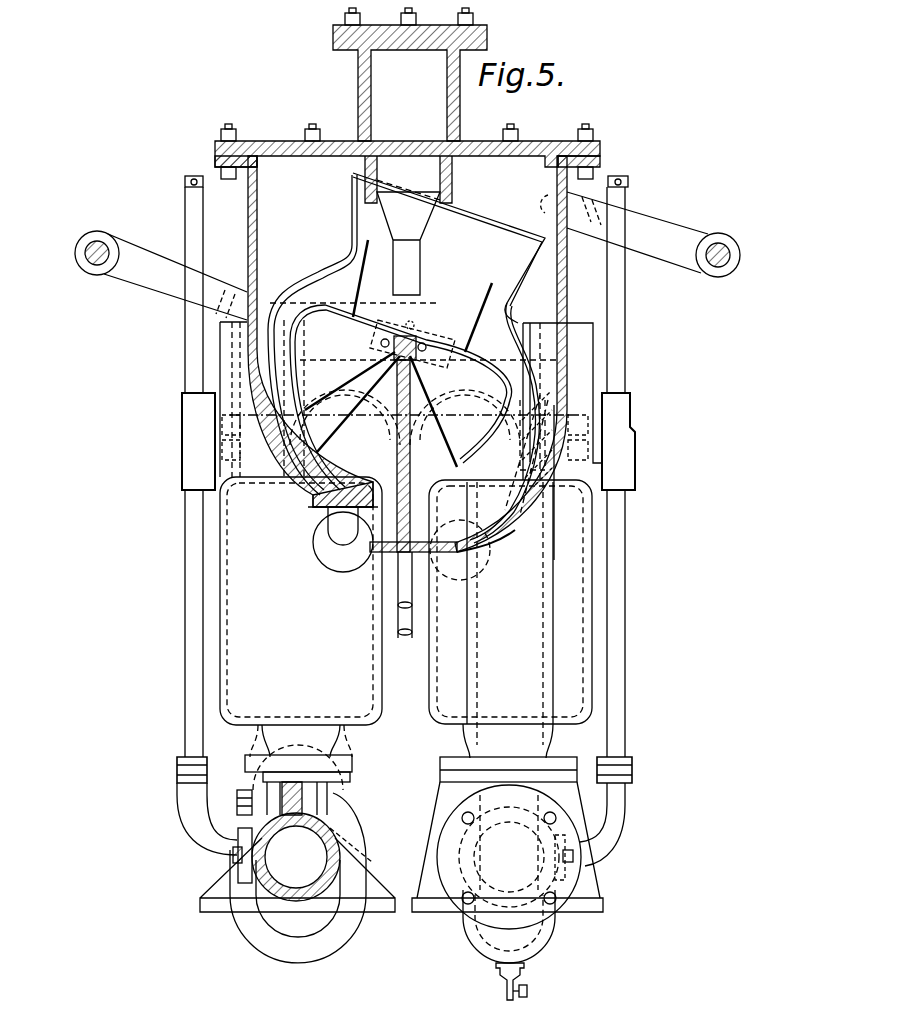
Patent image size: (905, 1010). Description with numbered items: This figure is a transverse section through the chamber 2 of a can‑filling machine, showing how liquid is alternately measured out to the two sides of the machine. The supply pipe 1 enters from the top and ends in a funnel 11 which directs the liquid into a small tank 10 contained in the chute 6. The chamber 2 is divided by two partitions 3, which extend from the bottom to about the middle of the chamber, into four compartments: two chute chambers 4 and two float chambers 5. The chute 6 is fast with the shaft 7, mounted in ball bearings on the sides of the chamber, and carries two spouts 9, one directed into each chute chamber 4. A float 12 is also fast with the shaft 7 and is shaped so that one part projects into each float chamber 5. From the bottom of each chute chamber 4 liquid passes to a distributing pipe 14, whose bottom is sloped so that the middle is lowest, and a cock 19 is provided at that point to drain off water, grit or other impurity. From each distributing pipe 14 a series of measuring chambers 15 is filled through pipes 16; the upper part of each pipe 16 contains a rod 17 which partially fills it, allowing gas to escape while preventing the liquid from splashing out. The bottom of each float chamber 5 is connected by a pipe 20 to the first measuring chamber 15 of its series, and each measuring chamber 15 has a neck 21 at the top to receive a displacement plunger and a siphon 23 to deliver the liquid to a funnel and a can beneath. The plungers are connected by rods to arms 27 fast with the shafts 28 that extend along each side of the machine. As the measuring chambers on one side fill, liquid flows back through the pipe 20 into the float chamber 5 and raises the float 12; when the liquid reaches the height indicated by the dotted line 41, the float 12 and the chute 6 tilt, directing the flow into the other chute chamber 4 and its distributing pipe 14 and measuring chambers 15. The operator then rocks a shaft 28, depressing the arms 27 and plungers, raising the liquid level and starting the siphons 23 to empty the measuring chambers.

The supply pipe 1 is at (410, 105).
The chamber 2 is at (249, 208).
The partition 3 is at (538, 332).
The chute chamber 4 is at (496, 512).
The float chamber 5 is at (318, 484).
The chute 6 is at (449, 358).
The shaft 7 is at (393, 344).
The spout 9 is at (255, 345).
The small tank 10 is at (486, 300).
The funnel 11 is at (408, 237).
The float 12 is at (326, 428).
The distributing pipe 14 is at (552, 936).
The measuring chamber 15 is at (262, 662).
The pipe 16 is at (190, 616).
The rod 17 is at (203, 170).
The cock 19 is at (502, 983).
The pipe 20 is at (470, 560).
The neck 21 is at (411, 401).
The siphon 23 is at (396, 608).
The arm 27 is at (406, 256).
The shaft 28 is at (100, 262).
The dotted line 41 is at (183, 404).